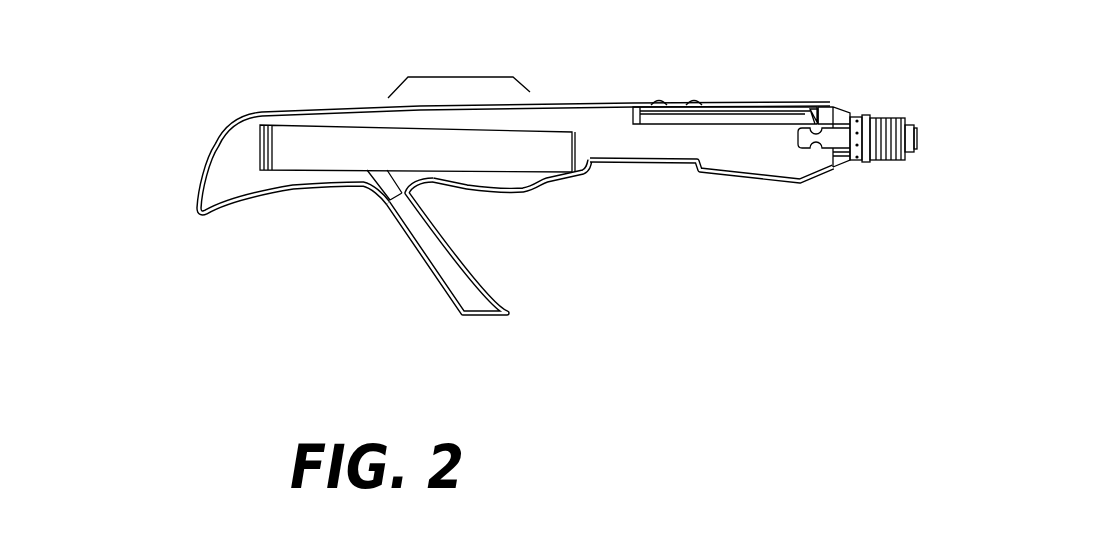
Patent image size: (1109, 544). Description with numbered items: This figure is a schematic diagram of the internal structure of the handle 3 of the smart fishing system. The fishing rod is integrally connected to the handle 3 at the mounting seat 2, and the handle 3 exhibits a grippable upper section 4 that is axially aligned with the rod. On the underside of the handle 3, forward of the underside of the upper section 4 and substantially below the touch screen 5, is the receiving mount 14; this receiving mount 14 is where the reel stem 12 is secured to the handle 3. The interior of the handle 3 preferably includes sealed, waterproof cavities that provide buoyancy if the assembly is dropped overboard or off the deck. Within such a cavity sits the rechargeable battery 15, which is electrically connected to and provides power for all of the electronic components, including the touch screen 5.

The mounting seat 2 is at (903, 155).
The handle 3 is at (290, 112).
The grippable upper section 4 is at (452, 77).
The touch screen 5 is at (697, 102).
The reel stem 12 is at (420, 250).
The receiving mount 14 is at (594, 163).
The rechargeable battery 15 is at (293, 157).